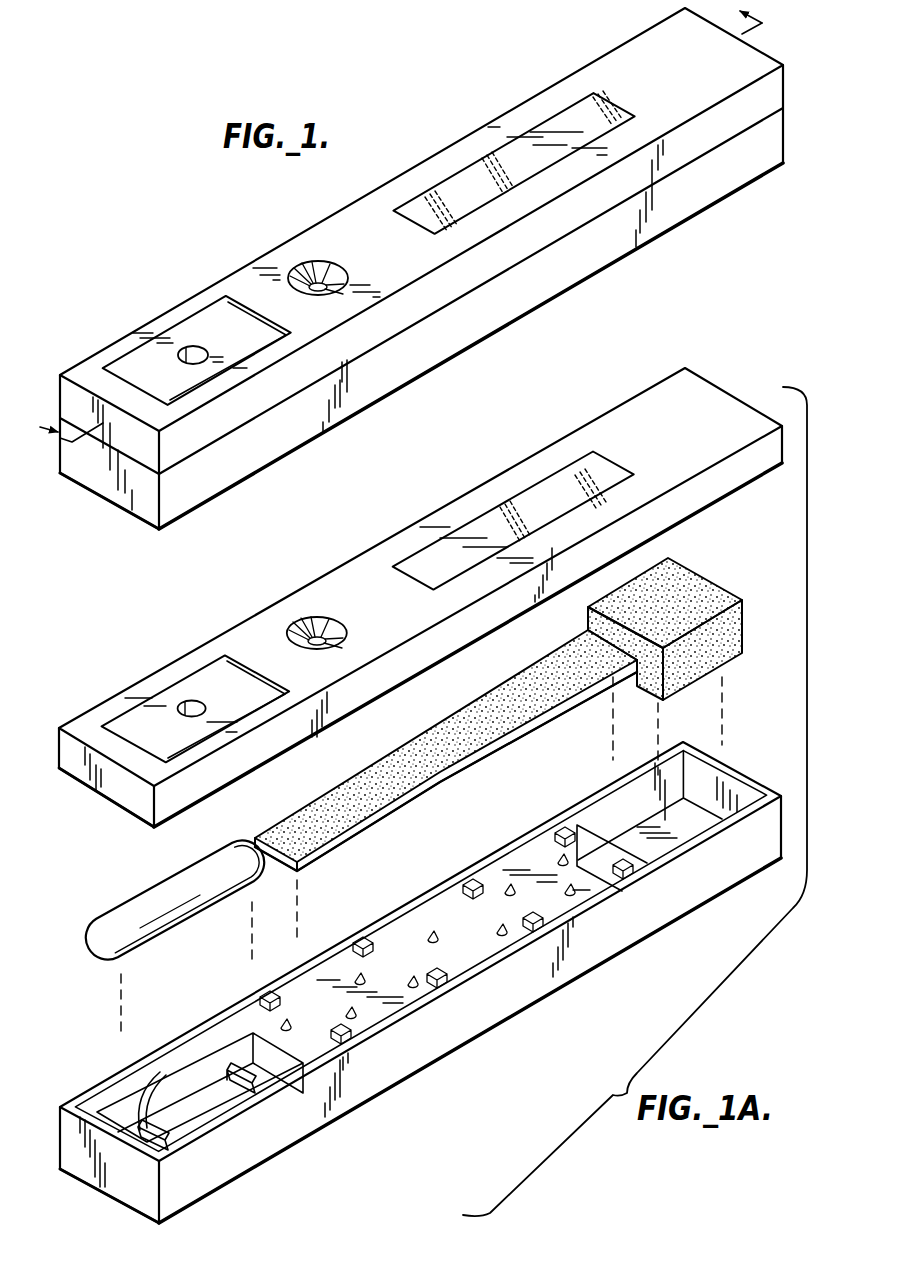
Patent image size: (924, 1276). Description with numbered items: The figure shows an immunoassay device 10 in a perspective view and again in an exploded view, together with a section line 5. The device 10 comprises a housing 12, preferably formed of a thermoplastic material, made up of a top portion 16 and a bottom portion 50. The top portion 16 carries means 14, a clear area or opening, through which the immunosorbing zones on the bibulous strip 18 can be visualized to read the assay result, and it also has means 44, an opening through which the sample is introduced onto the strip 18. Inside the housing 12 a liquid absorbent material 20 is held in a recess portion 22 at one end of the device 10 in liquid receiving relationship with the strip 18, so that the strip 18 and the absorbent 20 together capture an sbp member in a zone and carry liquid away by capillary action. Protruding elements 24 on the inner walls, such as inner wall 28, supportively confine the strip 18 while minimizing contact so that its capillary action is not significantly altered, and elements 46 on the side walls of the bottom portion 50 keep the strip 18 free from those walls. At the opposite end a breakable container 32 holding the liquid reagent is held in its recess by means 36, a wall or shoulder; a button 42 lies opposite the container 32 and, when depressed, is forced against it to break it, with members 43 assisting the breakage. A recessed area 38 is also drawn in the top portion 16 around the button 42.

In FIG. 1, the device 10 is at (136, 249).
In FIG. 1A, the device 10 is at (114, 626).
In FIG. 1, the housing 12 is at (347, 191).
In FIG. 1, the means for visualizing immunosorbing zones 14 is at (457, 176).
In FIG. 1A, the means for visualizing immunosorbing zones 14 is at (482, 498).
In FIG. 1, the top portion of housing 16 is at (622, 62).
In FIG. 1A, the top portion of housing 16 is at (625, 420).
In FIG. 1A, the bibulous strip 18 is at (423, 742).
In FIG. 1A, the liquid absorbent material 20 is at (698, 597).
In FIG. 1A, the recess portion 22 is at (710, 783).
In FIG. 1A, the protruding elements 24 is at (500, 927).
In FIG. 1A, the inner wall 28 is at (462, 966).
In FIG. 1A, the breakable container 32 is at (152, 898).
In FIG. 1A, the means for supportively confining container 36 is at (157, 1098).
In FIG. 1, the recessed area 38 is at (149, 365).
In FIG. 1, the button 42 is at (191, 349).
In FIG. 1A, the button 42 is at (189, 706).
In FIG. 1A, the members to assist breakage 43 is at (232, 1070).
In FIG. 1, the means for introducing sample 44 is at (311, 263).
In FIG. 1A, the means for introducing sample 44 is at (318, 638).
In FIG. 1A, the means for maintaining strip free from side walls 46 is at (555, 843).
In FIG. 1, the bottom portion 50 is at (695, 205).
In FIG. 1A, the bottom portion 50 is at (650, 923).
In FIG. 1, the section line 5 is at (393, 221).